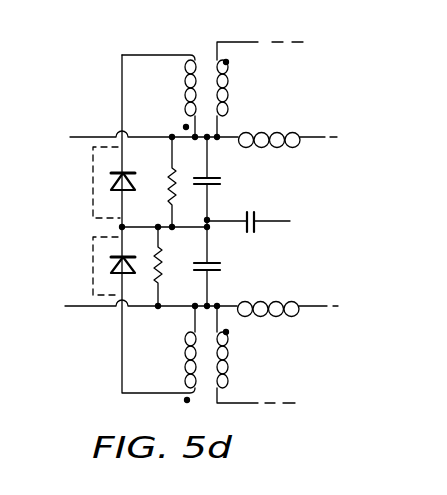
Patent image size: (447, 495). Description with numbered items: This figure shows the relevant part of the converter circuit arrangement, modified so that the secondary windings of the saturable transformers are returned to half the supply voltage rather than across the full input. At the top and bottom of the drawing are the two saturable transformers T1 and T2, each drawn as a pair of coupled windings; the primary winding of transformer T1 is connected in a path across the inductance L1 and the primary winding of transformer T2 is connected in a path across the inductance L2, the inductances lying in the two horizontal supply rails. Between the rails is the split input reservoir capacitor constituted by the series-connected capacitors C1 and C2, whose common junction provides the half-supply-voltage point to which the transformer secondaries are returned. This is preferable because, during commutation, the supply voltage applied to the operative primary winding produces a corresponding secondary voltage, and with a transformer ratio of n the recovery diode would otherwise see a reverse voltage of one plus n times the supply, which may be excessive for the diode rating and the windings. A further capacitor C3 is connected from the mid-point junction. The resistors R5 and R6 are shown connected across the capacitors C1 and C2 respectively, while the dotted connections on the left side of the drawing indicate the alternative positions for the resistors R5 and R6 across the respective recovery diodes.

The saturable transformer T1 is at (240, 83).
The saturable transformer T2 is at (240, 369).
The inductance L1 is at (288, 128).
The inductance L2 is at (288, 299).
The capacitor C1 is at (230, 167).
The capacitor C2 is at (224, 265).
The capacitor C3 is at (266, 208).
The resistor R5 is at (163, 186).
The resistor R6 is at (167, 268).